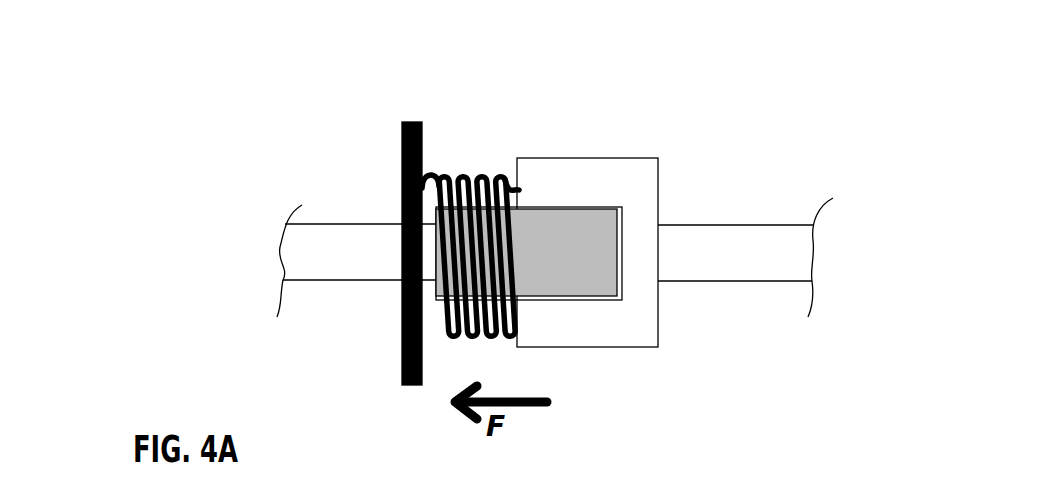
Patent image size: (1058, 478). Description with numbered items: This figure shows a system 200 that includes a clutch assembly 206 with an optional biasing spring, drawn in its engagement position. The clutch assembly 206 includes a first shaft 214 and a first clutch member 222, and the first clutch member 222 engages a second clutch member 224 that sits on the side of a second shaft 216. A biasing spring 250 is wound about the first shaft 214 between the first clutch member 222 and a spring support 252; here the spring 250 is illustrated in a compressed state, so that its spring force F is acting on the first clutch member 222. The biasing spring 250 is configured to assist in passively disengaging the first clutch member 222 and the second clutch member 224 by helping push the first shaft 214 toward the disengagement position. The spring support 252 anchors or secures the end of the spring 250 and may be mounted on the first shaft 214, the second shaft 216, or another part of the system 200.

The system 200 is at (97, 121).
The clutch assembly 206 is at (304, 80).
The first shaft 214 is at (358, 281).
The second shaft 216 is at (714, 282).
The first clutch member 222 is at (572, 296).
The second clutch member 224 is at (658, 158).
The biasing spring 250 is at (468, 160).
The spring support 252 is at (401, 142).